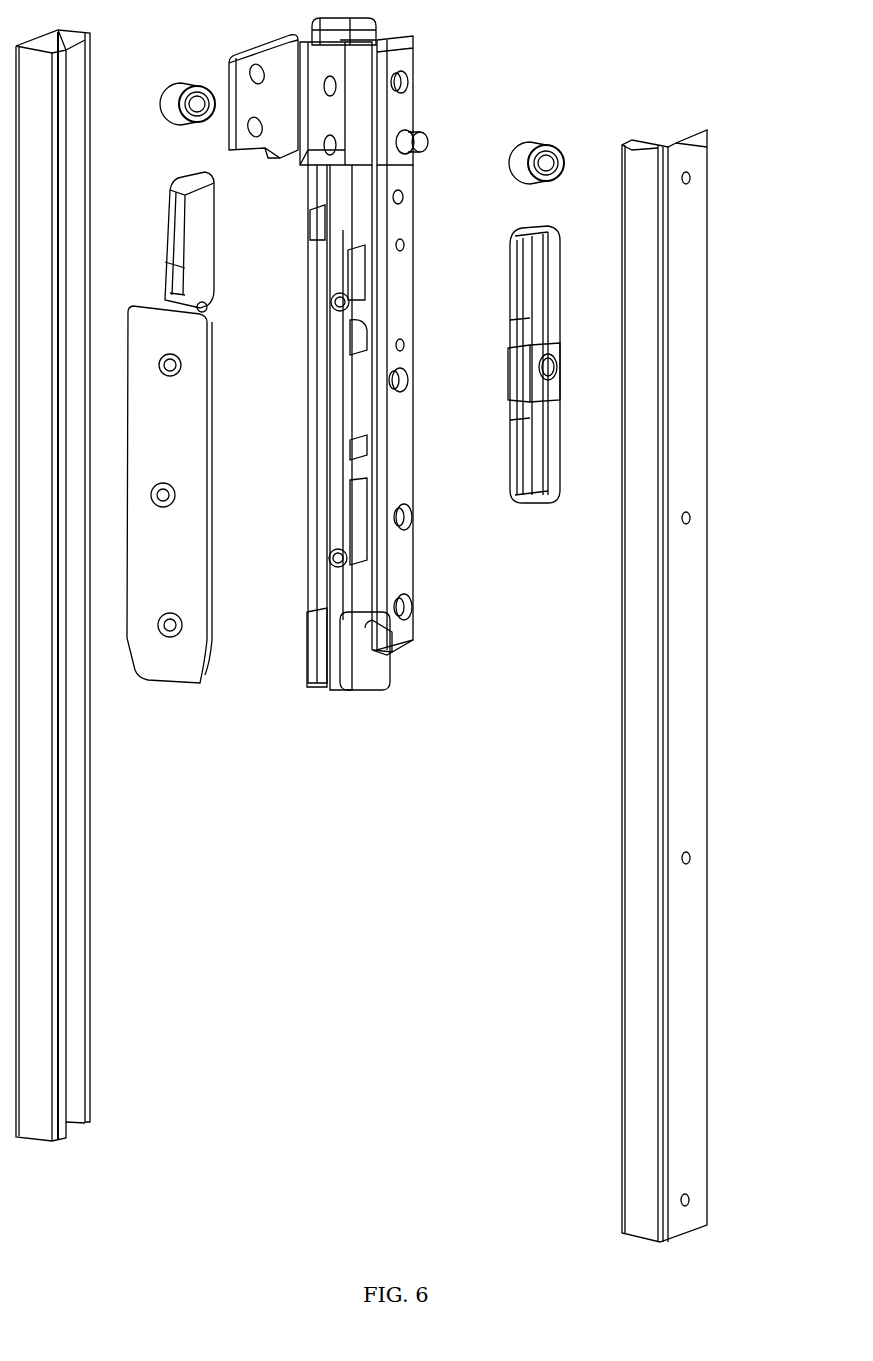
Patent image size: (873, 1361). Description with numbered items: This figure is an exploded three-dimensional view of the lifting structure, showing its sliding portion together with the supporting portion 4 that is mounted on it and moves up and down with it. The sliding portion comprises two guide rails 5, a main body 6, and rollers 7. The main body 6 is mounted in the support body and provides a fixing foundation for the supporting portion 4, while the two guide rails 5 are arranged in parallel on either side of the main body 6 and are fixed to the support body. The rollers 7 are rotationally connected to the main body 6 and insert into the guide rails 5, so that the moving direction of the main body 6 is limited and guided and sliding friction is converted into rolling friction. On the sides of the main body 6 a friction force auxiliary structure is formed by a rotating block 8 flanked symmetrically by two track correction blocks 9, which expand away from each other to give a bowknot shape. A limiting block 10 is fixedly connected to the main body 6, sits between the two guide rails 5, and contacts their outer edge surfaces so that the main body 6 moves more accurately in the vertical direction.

The supporting portion 4 is at (327, 113).
The guide rail 5 is at (680, 322).
The main body 6 is at (337, 464).
The roller 7 is at (563, 158).
The rotating block 8 is at (525, 375).
The track correction block 9 is at (521, 286).
The limiting block 10 is at (158, 555).